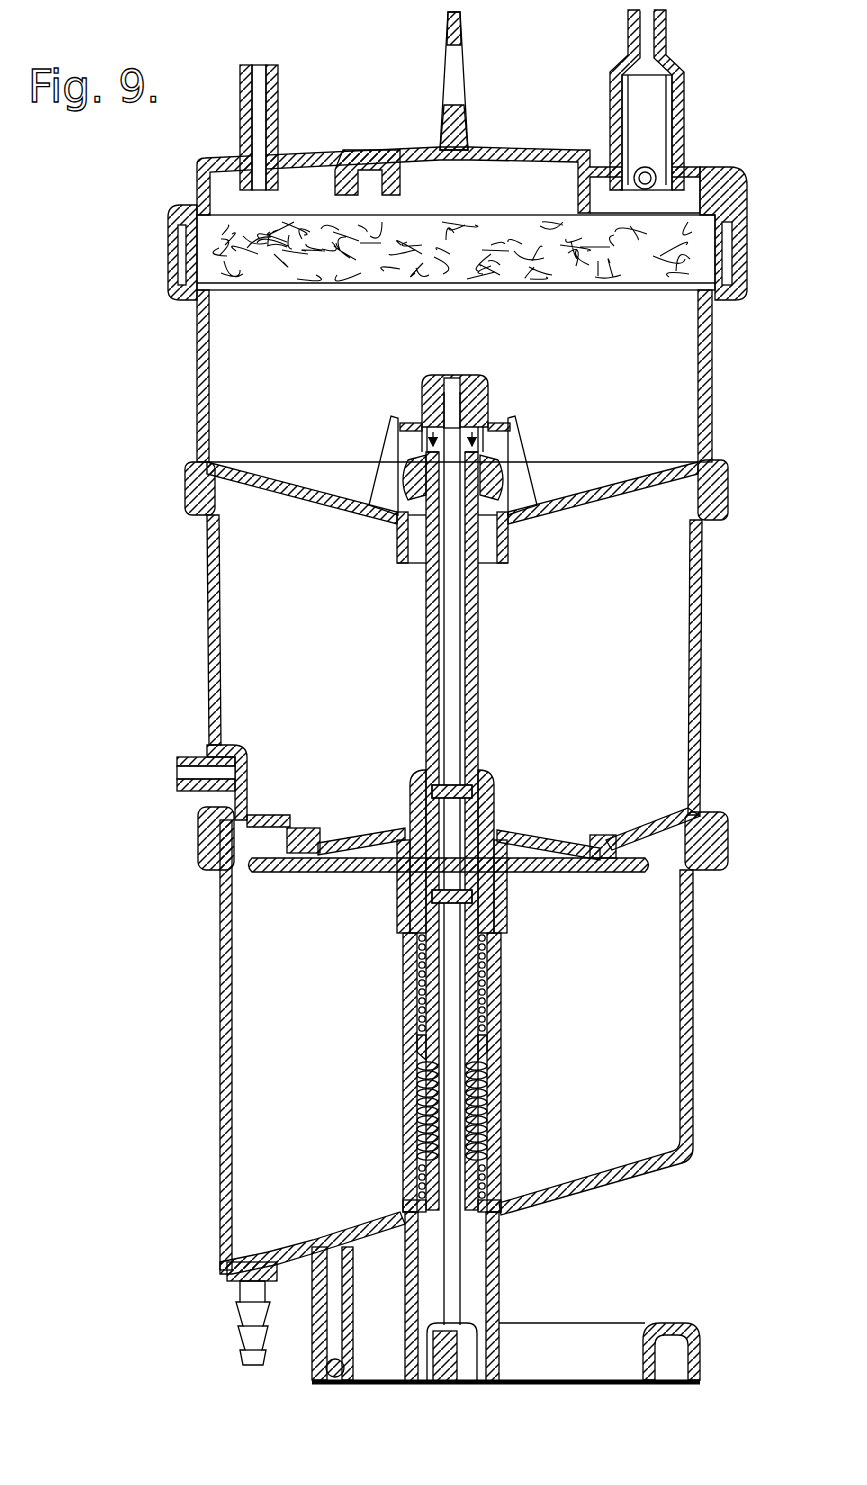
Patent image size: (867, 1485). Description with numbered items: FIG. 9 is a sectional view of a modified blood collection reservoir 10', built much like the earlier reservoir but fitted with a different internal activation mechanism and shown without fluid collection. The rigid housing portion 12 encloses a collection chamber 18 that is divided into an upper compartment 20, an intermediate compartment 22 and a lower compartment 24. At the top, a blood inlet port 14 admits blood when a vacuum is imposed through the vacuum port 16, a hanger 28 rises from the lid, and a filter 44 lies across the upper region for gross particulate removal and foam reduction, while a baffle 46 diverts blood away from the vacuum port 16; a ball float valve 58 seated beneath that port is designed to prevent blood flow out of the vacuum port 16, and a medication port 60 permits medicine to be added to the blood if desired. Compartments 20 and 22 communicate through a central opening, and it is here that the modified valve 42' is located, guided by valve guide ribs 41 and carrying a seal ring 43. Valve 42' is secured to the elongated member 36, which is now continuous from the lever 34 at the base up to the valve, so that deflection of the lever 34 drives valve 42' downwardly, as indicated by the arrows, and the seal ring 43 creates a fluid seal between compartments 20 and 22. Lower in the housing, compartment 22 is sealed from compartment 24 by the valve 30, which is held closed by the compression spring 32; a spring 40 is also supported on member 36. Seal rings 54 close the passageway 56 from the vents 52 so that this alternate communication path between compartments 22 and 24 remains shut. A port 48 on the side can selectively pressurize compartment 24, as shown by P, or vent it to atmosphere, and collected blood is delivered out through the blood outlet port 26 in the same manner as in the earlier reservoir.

The reservoir 10' is at (781, 181).
The rigid housing portion 12 is at (452, 710).
The blood inlet port 14 is at (278, 118).
The vacuum port 16 is at (673, 67).
The collection chamber 18 is at (195, 408).
The compartment 20 is at (638, 399).
The compartment 22 is at (625, 668).
The compartment 24 is at (603, 1012).
The blood outlet port 26 is at (238, 1328).
The hanger 28 is at (447, 50).
The valve 30 is at (295, 874).
The spring 32 is at (423, 1135).
The lever 34 is at (622, 1322).
The elongated member 36 is at (452, 604).
The spring 40 is at (420, 1005).
The valve guide ribs 41 is at (378, 447).
The valve 42' is at (465, 395).
The seal ring 43 is at (500, 478).
The filter 44 is at (448, 213).
The baffle 46 is at (578, 191).
The port 48 is at (180, 790).
The vents 52 is at (492, 828).
The seal rings 54 is at (480, 775).
The passageway 56 is at (441, 632).
The ball float valve 58 is at (653, 165).
The medication port 60 is at (375, 148).
The pressurization P is at (168, 777).